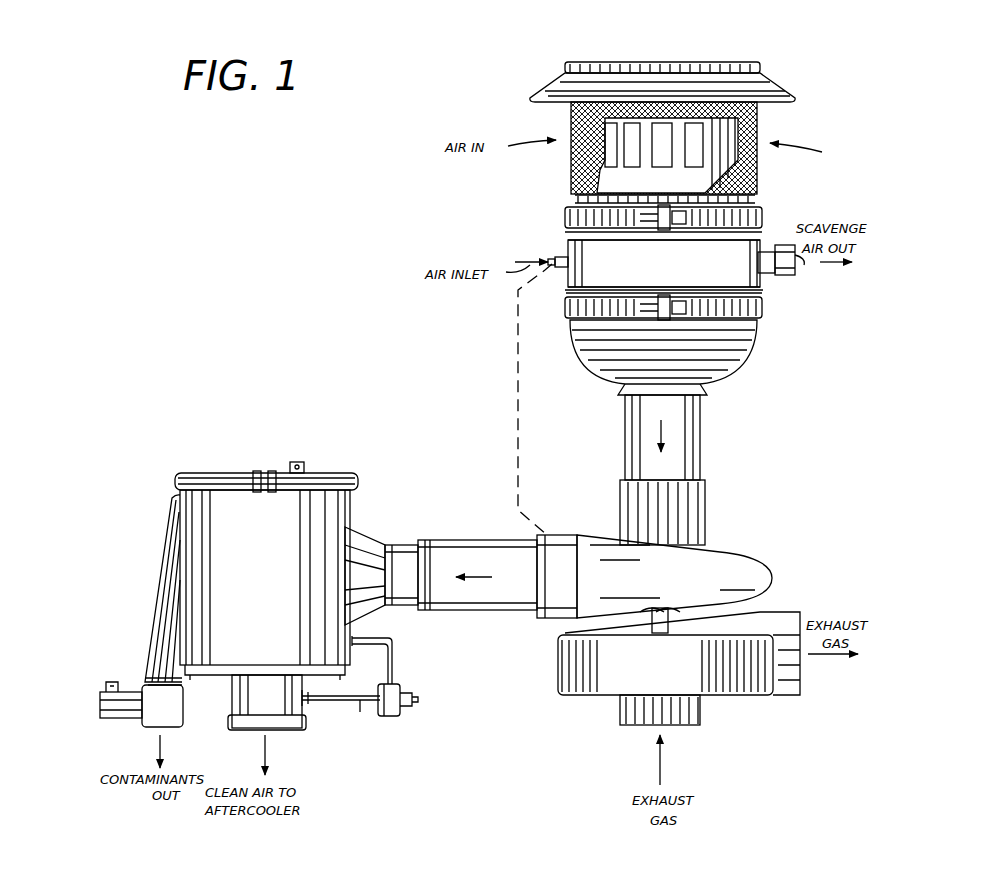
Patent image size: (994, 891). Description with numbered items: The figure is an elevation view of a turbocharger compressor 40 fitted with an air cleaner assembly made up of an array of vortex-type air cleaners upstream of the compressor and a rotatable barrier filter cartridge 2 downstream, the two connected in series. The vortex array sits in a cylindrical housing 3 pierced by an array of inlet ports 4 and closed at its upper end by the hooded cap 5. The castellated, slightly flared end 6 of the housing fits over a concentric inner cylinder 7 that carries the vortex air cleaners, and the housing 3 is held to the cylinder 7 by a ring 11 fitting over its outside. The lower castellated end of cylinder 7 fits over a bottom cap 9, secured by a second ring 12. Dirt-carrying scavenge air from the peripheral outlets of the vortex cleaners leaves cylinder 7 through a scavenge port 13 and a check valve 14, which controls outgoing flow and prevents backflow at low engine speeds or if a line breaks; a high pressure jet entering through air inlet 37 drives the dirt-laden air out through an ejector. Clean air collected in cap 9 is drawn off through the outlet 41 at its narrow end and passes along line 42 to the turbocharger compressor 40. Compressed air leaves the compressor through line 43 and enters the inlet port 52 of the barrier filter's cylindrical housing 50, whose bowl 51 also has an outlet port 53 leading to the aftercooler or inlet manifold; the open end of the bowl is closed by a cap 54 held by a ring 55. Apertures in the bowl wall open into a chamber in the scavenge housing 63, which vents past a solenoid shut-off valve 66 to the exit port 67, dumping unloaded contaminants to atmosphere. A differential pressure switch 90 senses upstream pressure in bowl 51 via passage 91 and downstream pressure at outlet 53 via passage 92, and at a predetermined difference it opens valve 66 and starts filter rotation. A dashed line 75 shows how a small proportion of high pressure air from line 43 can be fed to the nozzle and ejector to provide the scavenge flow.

The rotatable barrier filter cartridge 2 is at (781, 256).
The cylindrical housing 3 is at (760, 175).
The inlet ports 4 is at (690, 158).
The hooded cap 5 is at (768, 73).
The castellated end of cylinder 6 is at (566, 222).
The concentric inner cylinder 7 is at (663, 272).
The bottom cap 9 is at (584, 346).
The ring 11 is at (566, 210).
The ring 12 is at (566, 307).
The scavenge port 13 is at (768, 275).
The check valve 14 is at (795, 276).
The air inlet 37 is at (556, 258).
The turbocharger compressor 40 is at (798, 572).
The outlet 41 is at (706, 392).
The line connection 42 is at (700, 440).
The line 43 is at (480, 552).
The cylindrical housing 50 is at (346, 672).
The bowl 51 is at (262, 594).
The inlet port 52 is at (375, 620).
The outlet port 53 is at (306, 708).
The cap 54 is at (238, 475).
The ring 55 is at (356, 478).
The scavenge housing 63 is at (147, 643).
The solenoid shut-off valve 66 is at (118, 722).
The exit port 67 is at (168, 728).
The line 75 is at (518, 403).
The differential pressure switch 90 is at (397, 686).
The passage 91 is at (393, 650).
The passage 92 is at (360, 712).